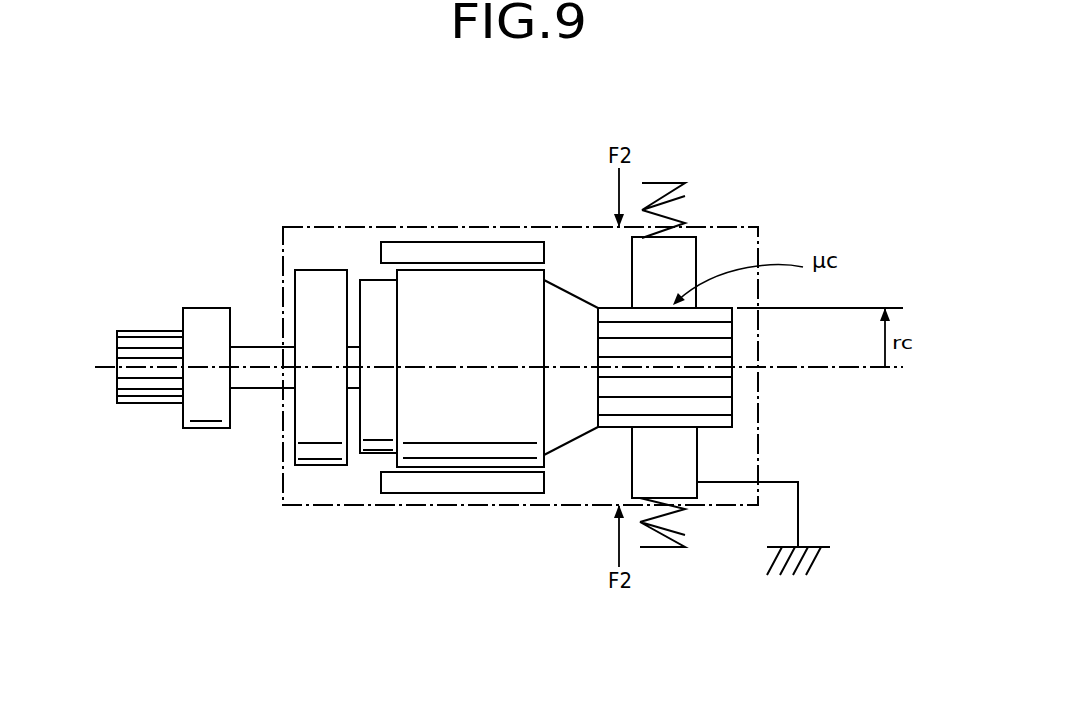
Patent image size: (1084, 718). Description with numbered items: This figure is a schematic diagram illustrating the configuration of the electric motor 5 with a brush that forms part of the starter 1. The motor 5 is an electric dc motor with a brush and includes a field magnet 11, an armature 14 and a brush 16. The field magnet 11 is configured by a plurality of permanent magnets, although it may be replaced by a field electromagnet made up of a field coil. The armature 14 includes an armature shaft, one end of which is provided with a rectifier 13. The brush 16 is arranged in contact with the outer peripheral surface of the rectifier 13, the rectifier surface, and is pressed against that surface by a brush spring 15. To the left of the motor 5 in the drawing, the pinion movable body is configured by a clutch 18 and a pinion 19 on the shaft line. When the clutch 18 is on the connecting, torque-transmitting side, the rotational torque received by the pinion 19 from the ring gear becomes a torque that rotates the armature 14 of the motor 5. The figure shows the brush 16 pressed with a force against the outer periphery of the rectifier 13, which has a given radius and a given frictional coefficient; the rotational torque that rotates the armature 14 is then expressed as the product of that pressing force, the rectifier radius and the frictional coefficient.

The starter 1 is at (408, 203).
The electric motor 5 is at (370, 506).
The field magnet 11 is at (461, 487).
The rectifier 13 is at (712, 390).
The armature 14 is at (520, 454).
The brush spring 15 is at (680, 182).
The brush 16 is at (683, 252).
The clutch 18 is at (208, 418).
The pinion 19 is at (152, 392).